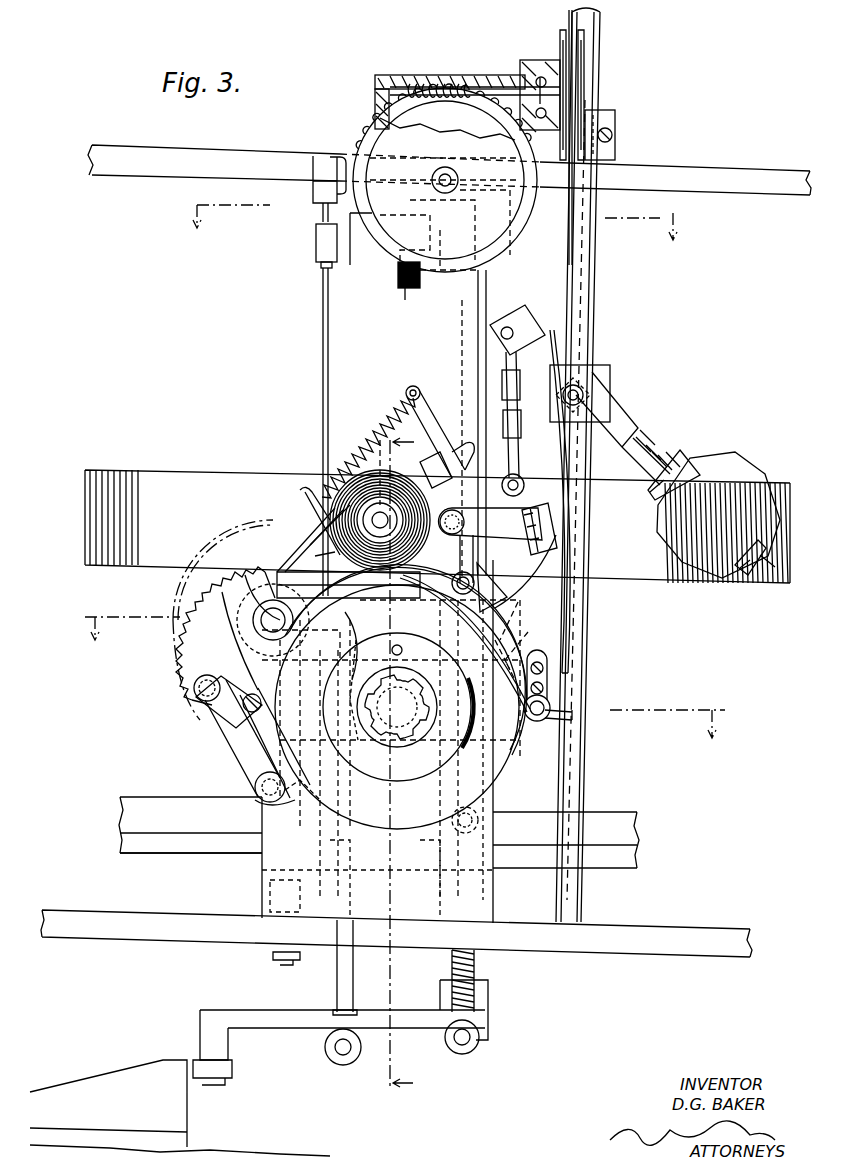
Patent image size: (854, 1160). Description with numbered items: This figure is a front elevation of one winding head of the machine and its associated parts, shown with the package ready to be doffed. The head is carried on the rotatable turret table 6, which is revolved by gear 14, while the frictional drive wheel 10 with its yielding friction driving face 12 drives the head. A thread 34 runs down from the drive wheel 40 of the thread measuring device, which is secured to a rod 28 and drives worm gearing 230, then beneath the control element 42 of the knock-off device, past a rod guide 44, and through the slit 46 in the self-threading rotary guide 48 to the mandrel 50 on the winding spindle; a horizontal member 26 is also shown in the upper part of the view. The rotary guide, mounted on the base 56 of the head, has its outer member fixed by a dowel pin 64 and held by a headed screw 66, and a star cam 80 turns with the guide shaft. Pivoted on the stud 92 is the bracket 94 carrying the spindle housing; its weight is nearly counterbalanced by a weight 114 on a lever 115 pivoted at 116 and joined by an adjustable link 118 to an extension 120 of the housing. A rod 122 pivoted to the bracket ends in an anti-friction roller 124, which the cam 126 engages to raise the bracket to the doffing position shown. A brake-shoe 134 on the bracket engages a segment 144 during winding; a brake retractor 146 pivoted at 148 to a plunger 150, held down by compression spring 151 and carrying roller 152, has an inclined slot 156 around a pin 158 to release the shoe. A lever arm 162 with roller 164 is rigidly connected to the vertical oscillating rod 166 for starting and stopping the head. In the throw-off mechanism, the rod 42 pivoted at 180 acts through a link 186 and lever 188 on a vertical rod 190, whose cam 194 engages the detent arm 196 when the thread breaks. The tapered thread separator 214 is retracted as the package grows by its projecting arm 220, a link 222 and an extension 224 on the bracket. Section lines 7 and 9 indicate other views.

The turret table 6 is at (705, 931).
The section line 7- 7 is at (405, 686).
The section line 9- 9 is at (409, 764).
The frictional drive wheel 10 is at (149, 850).
The friction driving face 12 is at (379, 832).
The gear 14 is at (433, 232).
The upper cross bar 26 is at (745, 172).
The rod 28 is at (592, 297).
The thread 34 is at (576, 31).
The drive wheel of thread measuring device 40 is at (586, 104).
The control element rod 42 is at (550, 716).
The rod guide 44 is at (545, 705).
The thread guide slot 46 is at (505, 771).
The self-threading rotary guide 48 is at (528, 756).
The mandrel 50 is at (362, 508).
The base of winding head 56 is at (272, 868).
The dowel pin 64 is at (392, 650).
The headed screw 66 is at (447, 706).
The star cam 80 is at (420, 690).
The stud 92 is at (253, 617).
The bracket 94 is at (318, 552).
The weight 114 is at (714, 514).
The lever 115 is at (627, 432).
The pivot 116 is at (612, 387).
The adjustable link 118 is at (518, 432).
The extension 120 is at (445, 452).
The rod 122 is at (337, 994).
The anti-friction roller 124 is at (339, 1066).
The cam 126 is at (104, 1072).
The brake-shoe 134 is at (552, 540).
The segment 144 is at (570, 624).
The brake retractor 146 is at (490, 584).
The pivot 148 is at (496, 815).
The plunger 150 is at (480, 982).
The compression spring 151 is at (490, 998).
The anti-friction roller 152 is at (472, 1048).
The inclined slot 156 is at (531, 649).
The pin 158 is at (523, 624).
The lever arm 162 is at (284, 1022).
The anti-friction roller 164 is at (230, 1074).
The vertical oscillating rod 166 is at (477, 362).
The pivot 180 is at (248, 790).
The link 186 is at (238, 746).
The lever 188 is at (235, 725).
The vertical rod 190 is at (320, 350).
The cam 194 is at (317, 244).
The detent arm 196 is at (360, 250).
The thread separator 214 is at (348, 553).
The projecting arm 220 is at (298, 810).
The link 222 is at (243, 760).
The extension 224 is at (200, 680).
The worm gearing 230 is at (455, 125).